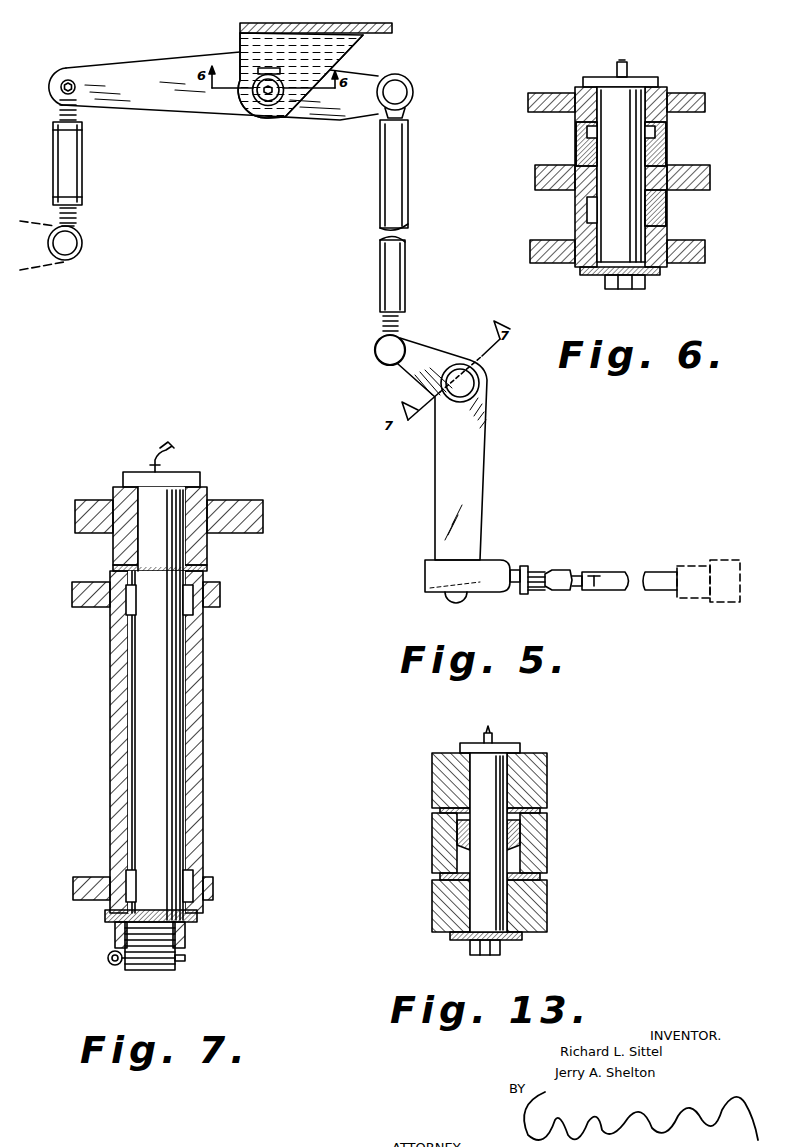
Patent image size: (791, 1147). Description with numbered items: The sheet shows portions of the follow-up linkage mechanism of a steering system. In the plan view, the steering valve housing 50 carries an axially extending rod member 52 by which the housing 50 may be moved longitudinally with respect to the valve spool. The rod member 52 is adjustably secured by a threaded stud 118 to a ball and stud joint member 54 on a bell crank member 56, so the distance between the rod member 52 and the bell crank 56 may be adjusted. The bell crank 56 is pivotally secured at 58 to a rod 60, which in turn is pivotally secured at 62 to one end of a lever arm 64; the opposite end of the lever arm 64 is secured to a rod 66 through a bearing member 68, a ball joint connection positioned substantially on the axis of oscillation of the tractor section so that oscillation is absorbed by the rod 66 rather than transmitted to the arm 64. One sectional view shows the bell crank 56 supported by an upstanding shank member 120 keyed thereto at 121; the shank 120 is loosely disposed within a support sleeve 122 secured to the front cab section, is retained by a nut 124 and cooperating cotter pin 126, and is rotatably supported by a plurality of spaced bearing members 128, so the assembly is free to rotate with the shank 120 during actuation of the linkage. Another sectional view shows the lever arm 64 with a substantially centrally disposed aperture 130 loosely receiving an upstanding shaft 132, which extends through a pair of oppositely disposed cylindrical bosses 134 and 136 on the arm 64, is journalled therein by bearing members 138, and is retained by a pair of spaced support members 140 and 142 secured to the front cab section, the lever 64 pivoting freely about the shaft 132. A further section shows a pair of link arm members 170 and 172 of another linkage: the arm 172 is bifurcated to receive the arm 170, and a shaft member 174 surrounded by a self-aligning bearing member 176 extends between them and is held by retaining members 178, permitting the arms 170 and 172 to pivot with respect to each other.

In FIG. 5, the housing 50 is at (725, 570).
In FIG. 5, the rod member 52 is at (655, 578).
In FIG. 5, the ball and stud joint member 54 is at (480, 570).
In FIG. 5, the bell crank member 56 is at (472, 449).
In FIG. 7, the bell crank member 56 is at (232, 510).
In FIG. 5, the pivot connection 58 is at (388, 352).
In FIG. 5, the rod 60 is at (403, 180).
In FIG. 5, the pivot connection 62 is at (401, 86).
In FIG. 5, the lever arm 64 is at (158, 100).
In FIG. 6, the lever arm 64 is at (695, 175).
In FIG. 5, the rod 66 is at (76, 163).
In FIG. 5, the bearing member 68 is at (60, 107).
In FIG. 5, the threaded stud 118 is at (555, 570).
In FIG. 5, the shank member 120 is at (457, 382).
In FIG. 7, the shank member 120 is at (170, 745).
In FIG. 7, the key 121 is at (172, 505).
In FIG. 7, the support sleeve 122 is at (200, 800).
In FIG. 7, the nut 124 is at (190, 940).
In FIG. 7, the cotter pin 126 is at (108, 953).
In FIG. 7, the bearing members 128 is at (120, 605).
In FIG. 6, the aperture 130 is at (590, 178).
In FIG. 6, the shaft 132 is at (660, 142).
In FIG. 6, the cylindrical boss 134 is at (658, 214).
In FIG. 6, the cylindrical boss 136 is at (580, 157).
In FIG. 6, the bearing members 138 is at (588, 134).
In FIG. 6, the support member 140 is at (705, 250).
In FIG. 6, the support member 142 is at (682, 105).
In FIG. 13, the link arm member 170 is at (545, 857).
In FIG. 13, the link arm member 172 is at (540, 790).
In FIG. 13, the shaft member 174 is at (500, 770).
In FIG. 13, the self-aligning bearing member 176 is at (520, 835).
In FIG. 13, the retaining members 178 is at (462, 745).